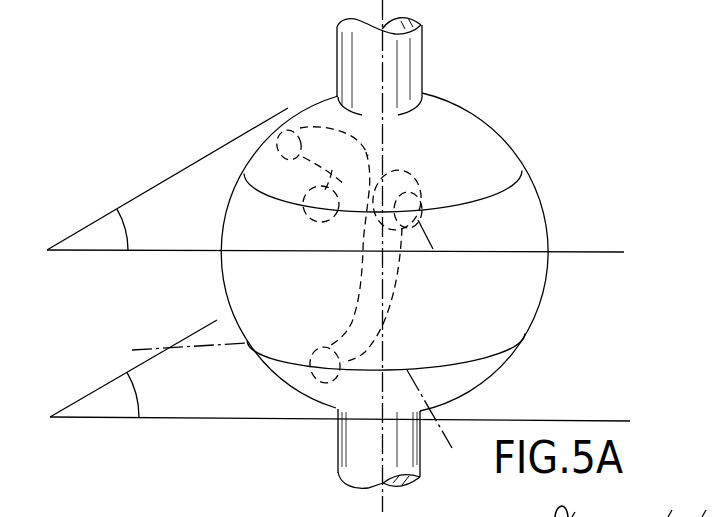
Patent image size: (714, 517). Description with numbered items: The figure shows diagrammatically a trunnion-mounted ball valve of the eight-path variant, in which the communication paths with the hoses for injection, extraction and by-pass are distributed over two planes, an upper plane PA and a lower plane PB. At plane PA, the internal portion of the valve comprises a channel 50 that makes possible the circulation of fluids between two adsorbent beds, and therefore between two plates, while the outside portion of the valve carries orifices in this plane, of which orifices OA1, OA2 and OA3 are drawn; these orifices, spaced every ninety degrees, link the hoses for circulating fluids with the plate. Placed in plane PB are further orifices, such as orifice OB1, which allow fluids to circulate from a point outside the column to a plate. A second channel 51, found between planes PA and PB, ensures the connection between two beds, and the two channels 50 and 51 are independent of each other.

The channel 50 is at (274, 189).
The channel 51 is at (453, 300).
The orifice OA1 is at (300, 146).
The orifice OA2 is at (250, 242).
The orifice OA3 is at (490, 202).
The orifice OB1 is at (349, 396).
The plane PA is at (335, 180).
The plane PB is at (340, 370).